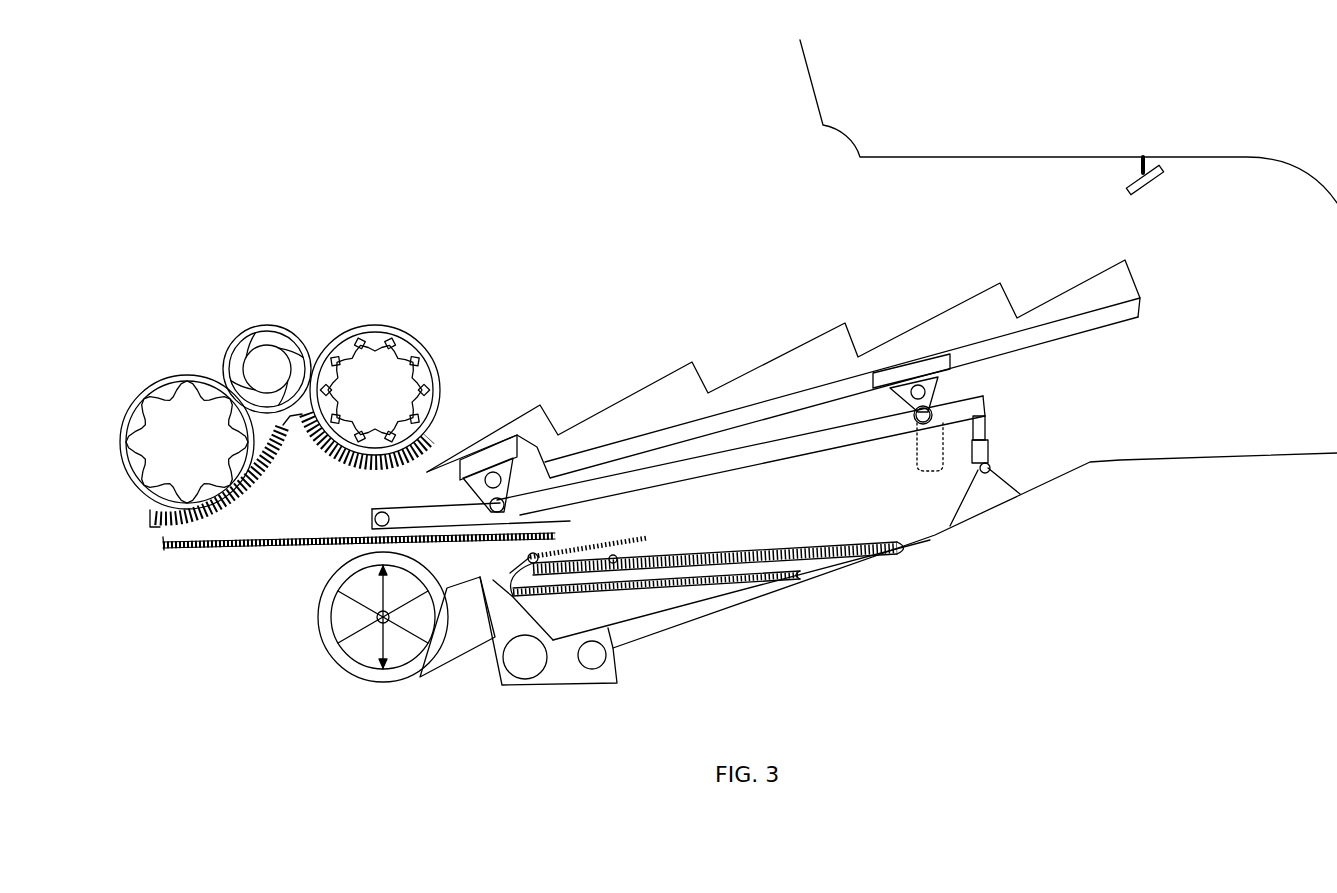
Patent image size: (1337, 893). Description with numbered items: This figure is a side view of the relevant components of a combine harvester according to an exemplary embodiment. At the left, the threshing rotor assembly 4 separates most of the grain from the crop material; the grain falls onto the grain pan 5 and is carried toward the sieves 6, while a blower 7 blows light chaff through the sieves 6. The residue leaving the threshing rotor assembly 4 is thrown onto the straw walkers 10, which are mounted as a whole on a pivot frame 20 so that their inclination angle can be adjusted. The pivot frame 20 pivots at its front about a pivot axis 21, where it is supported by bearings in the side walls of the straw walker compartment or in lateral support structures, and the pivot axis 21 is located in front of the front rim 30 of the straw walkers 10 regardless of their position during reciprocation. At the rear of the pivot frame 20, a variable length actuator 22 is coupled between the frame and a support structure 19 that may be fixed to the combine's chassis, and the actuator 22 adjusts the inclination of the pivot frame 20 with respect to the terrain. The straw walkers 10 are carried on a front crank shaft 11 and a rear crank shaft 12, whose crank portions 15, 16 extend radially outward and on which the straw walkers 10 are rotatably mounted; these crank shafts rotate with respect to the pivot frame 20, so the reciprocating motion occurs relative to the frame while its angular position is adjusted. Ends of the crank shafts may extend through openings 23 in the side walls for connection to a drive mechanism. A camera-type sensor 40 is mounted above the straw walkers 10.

The threshing rotor assembly 4 is at (313, 305).
The front rim 30 is at (433, 427).
The straw walkers 10 is at (662, 385).
The crank portion 15 is at (478, 436).
The openings 23 is at (505, 520).
The pivot axis 21 is at (377, 513).
The pivot frame 20 is at (725, 467).
The crank portion 16 is at (910, 365).
The rear crank shaft 12 is at (925, 418).
The variable length actuator 22 is at (990, 451).
The support structure 19 is at (985, 492).
The front crank shaft 11 is at (490, 517).
The grain pan 5 is at (290, 548).
The blower 7 is at (356, 666).
The sieves 6 is at (645, 590).
The camera-type sensor 40 is at (1150, 195).